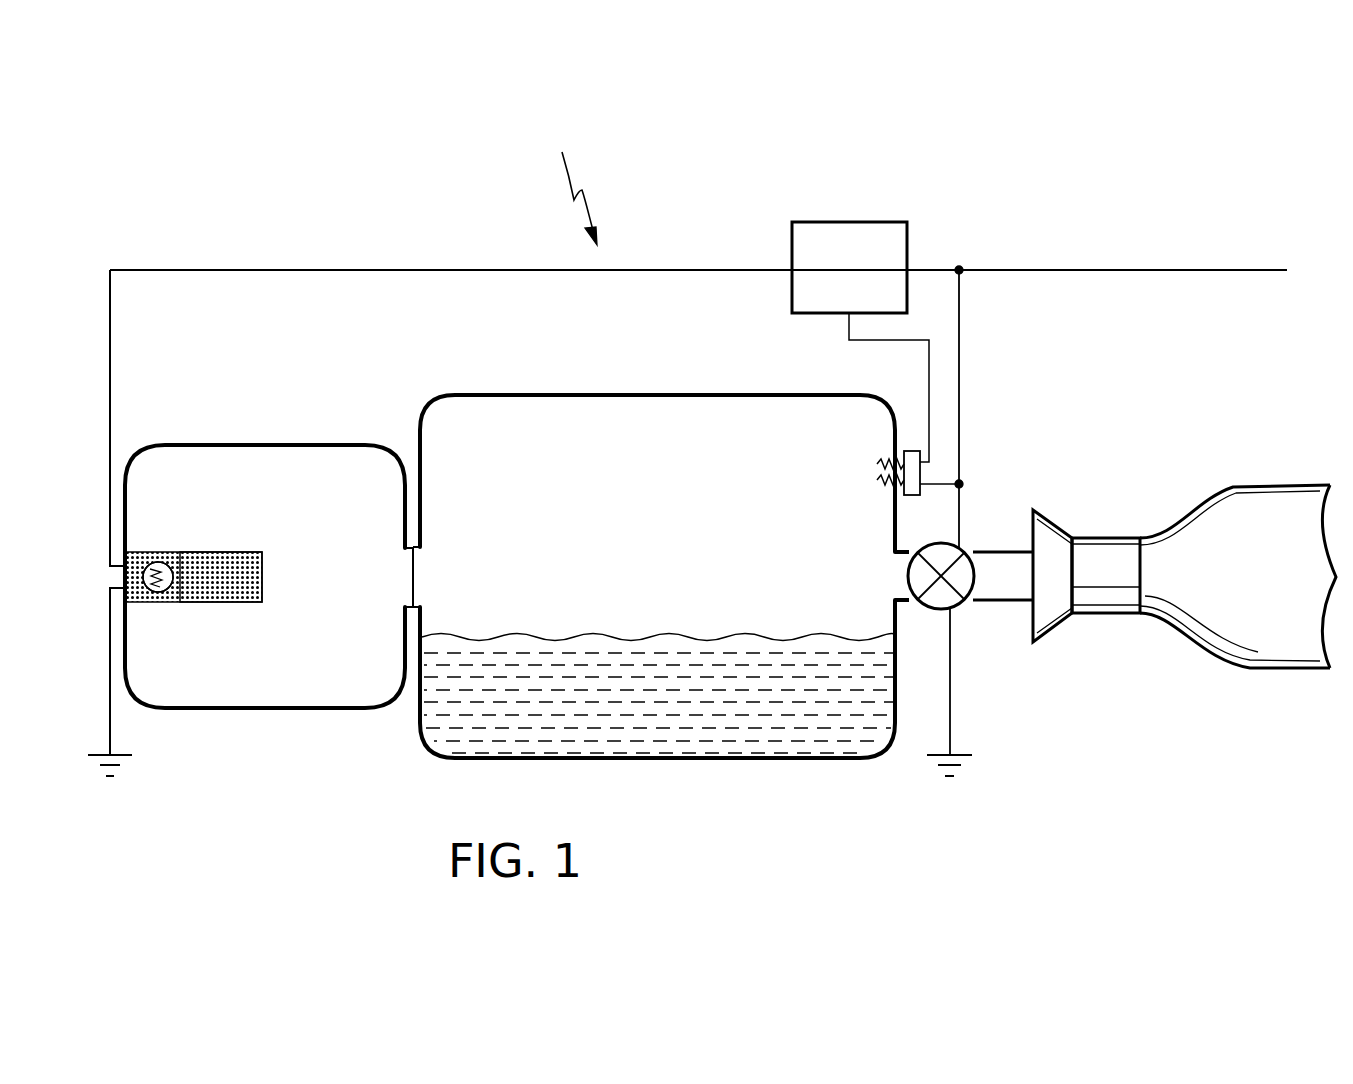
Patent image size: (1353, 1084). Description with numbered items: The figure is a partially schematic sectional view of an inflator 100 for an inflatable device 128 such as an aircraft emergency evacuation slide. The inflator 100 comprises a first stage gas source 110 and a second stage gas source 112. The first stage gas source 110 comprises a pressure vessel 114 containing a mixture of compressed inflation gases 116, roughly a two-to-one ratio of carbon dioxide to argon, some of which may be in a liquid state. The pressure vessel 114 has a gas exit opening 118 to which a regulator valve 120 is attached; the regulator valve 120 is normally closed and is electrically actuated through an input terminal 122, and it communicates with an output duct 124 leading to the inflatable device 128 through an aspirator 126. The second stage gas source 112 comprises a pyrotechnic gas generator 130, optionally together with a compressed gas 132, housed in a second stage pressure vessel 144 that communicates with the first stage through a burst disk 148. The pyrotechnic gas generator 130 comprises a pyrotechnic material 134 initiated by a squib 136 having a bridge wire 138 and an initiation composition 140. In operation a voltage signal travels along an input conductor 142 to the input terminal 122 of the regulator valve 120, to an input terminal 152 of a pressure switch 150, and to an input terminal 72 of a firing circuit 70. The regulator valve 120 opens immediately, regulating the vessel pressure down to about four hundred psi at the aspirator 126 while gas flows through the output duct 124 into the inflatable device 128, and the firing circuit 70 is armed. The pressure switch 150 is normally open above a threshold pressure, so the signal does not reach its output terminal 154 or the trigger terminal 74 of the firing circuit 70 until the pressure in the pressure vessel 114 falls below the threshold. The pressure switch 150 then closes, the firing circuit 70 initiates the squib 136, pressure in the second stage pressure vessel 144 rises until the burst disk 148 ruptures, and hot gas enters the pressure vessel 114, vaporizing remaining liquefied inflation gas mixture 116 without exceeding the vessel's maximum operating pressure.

The inflator 100 is at (576, 141).
The firing circuit 70 is at (832, 282).
The input terminal of firing circuit 72 is at (907, 262).
The trigger terminal of firing circuit 74 is at (849, 318).
The first stage gas source 110 is at (627, 533).
The second stage gas source 112 is at (312, 594).
The pressure vessel 114 is at (673, 394).
The inflation gas mixture 116 is at (747, 720).
The gas exit opening 118 is at (898, 577).
The regulator valve 120 is at (955, 610).
The input terminal of regulator valve 122 is at (960, 545).
The output duct 124 is at (978, 592).
The aspirator 126 is at (1113, 563).
The inflatable device 128 is at (1235, 591).
The pyrotechnic gas generator 130 is at (237, 553).
The compressed gas 132 is at (275, 683).
The pyrotechnic material 134 is at (200, 567).
The squib 136 is at (113, 577).
The bridge wire 138 is at (166, 555).
The initiation composition 140 is at (178, 602).
The input conductor 142 is at (1208, 270).
The second stage pressure vessel 144 is at (343, 444).
The burst disk 148 is at (416, 576).
The pressure switch 150 is at (877, 468).
The input terminal of pressure switch 152 is at (927, 470).
The output terminal of pressure switch 154 is at (925, 447).